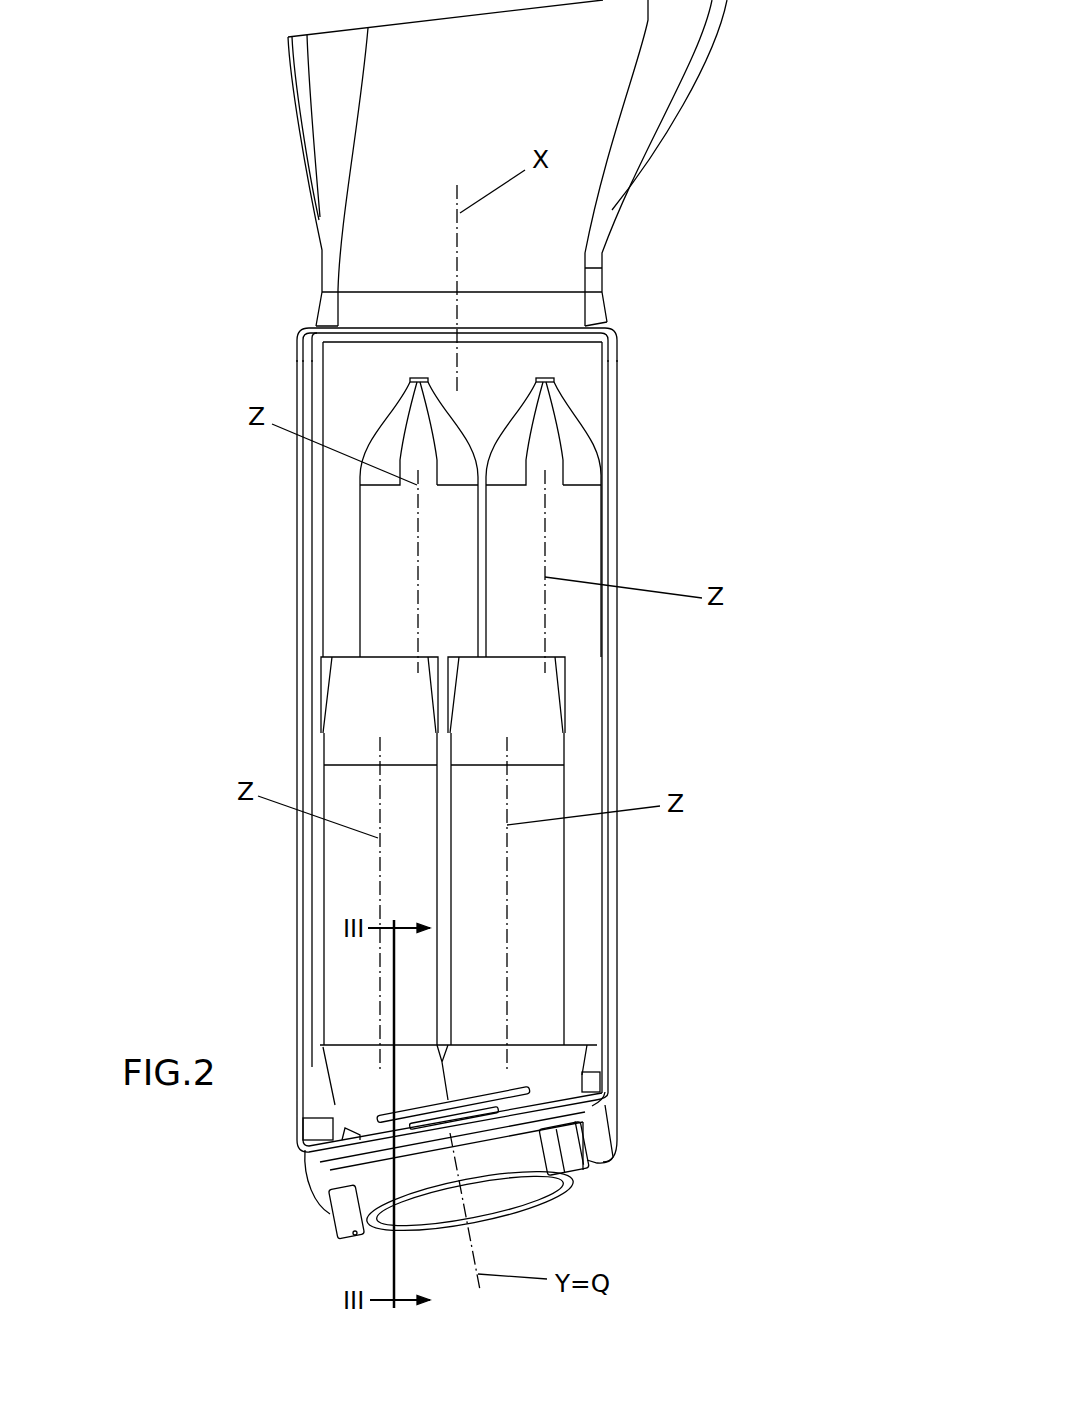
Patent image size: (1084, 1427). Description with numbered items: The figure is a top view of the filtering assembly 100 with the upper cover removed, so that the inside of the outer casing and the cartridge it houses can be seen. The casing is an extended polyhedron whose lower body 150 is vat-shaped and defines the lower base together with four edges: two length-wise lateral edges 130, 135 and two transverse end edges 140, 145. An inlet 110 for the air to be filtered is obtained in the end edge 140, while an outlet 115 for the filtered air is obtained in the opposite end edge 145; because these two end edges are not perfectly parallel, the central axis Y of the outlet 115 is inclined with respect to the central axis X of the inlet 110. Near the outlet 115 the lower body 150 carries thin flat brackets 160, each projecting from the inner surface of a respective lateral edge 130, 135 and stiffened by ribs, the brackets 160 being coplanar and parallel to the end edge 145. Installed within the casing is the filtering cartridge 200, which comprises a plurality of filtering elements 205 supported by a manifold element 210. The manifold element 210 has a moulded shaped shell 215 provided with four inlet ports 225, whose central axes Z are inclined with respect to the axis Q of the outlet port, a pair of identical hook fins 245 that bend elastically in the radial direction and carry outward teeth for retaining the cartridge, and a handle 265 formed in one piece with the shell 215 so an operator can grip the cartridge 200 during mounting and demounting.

The filtering assembly 100 is at (210, 390).
The inlet 110 is at (365, 324).
The outlet 115 is at (533, 1195).
The lateral edge 130 is at (612, 690).
The lateral edge 135 is at (302, 677).
The end edge 140 is at (552, 330).
The end edge 145 is at (593, 1147).
The lower body 150 is at (283, 604).
The brackets 160 is at (600, 1073).
The filtering cartridge 200 is at (317, 865).
The filtering elements 205 is at (370, 542).
The manifold element 210 is at (327, 1094).
The shaped shell 215 is at (523, 1073).
The inlet ports 225 is at (483, 1042).
The hook fins 245 is at (617, 1088).
The handle 265 is at (385, 1132).